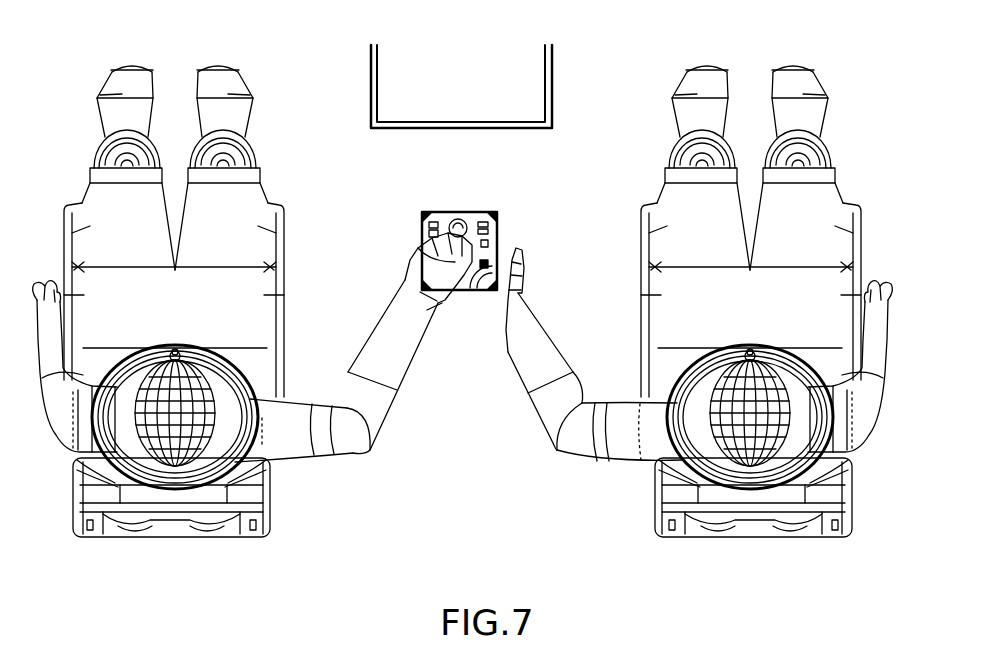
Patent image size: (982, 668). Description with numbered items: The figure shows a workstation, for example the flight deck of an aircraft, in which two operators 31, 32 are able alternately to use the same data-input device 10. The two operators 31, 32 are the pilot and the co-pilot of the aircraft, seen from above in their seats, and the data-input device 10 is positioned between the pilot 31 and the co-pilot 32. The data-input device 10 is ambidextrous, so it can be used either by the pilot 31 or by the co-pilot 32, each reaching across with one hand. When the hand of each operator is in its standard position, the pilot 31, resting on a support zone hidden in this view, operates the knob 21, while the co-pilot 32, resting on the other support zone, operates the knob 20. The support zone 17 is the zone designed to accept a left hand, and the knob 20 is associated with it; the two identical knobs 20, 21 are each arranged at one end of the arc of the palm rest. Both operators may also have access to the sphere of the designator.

The data-input device 10 is at (451, 220).
The support zone 17 is at (497, 265).
The knob 20 is at (487, 243).
The knob 21 is at (435, 222).
The operator (pilot) 31 is at (188, 311).
The operator (co-pilot) 32 is at (758, 317).